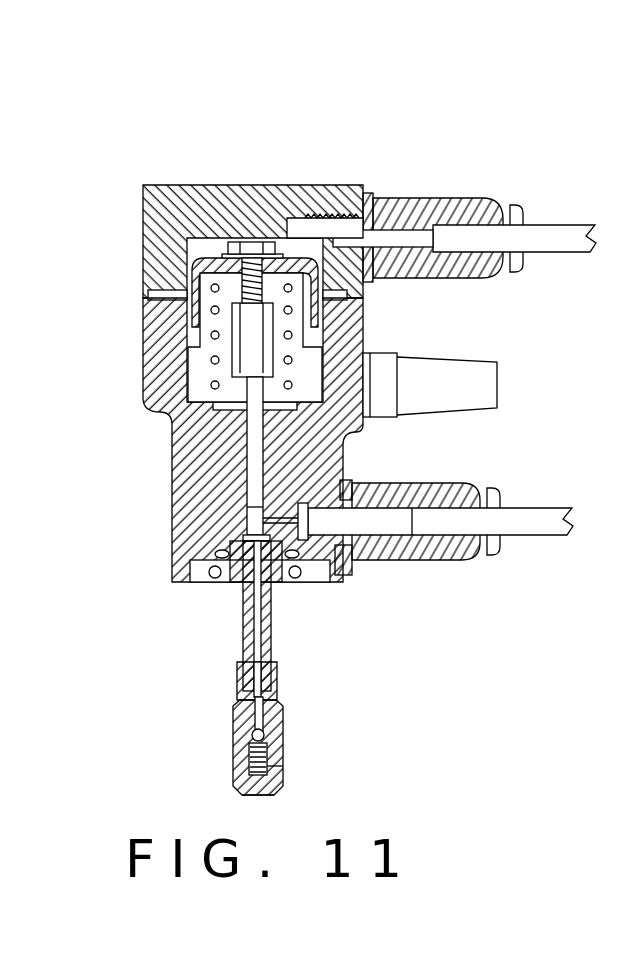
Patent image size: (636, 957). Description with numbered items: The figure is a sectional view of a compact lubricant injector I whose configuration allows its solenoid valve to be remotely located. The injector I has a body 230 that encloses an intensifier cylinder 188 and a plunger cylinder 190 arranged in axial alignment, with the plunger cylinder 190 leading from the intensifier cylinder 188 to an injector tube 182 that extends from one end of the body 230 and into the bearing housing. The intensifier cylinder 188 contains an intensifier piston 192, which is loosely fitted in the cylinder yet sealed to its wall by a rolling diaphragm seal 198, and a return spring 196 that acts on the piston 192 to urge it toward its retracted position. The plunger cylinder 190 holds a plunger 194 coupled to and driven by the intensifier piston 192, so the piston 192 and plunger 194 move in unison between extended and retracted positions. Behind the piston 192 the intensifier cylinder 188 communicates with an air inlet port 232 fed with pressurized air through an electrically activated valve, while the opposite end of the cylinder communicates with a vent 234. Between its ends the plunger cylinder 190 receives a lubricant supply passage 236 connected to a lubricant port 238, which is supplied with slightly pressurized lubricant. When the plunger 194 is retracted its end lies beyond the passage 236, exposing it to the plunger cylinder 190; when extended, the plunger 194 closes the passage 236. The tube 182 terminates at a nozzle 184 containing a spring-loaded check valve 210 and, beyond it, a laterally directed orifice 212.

The injector I is at (182, 154).
The body 230 is at (168, 215).
The air inlet port 232 is at (322, 232).
The intensifier piston 192 is at (190, 272).
The return spring 196 is at (212, 357).
The intensifier cylinder 188 is at (160, 403).
The plunger 194 is at (258, 445).
The plunger cylinder 190 is at (262, 521).
The rolling diaphragm seal 198 is at (352, 334).
The vent 234 is at (447, 375).
The lubricant supply passage 236 is at (282, 478).
The lubricant port 238 is at (338, 578).
The injector tube 182 is at (243, 620).
The spring-loaded check valve 210 is at (278, 724).
The nozzle 184 is at (233, 760).
The laterally directed orifice 212 is at (283, 780).